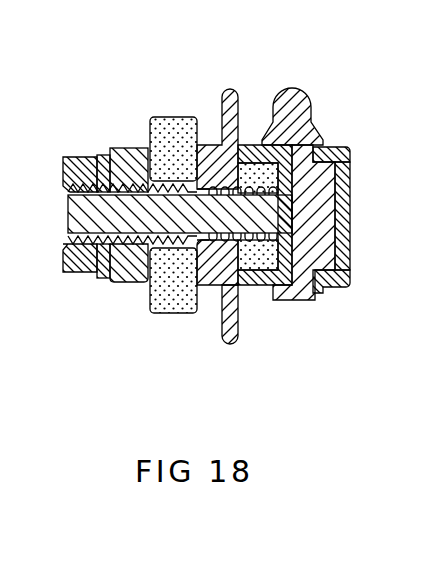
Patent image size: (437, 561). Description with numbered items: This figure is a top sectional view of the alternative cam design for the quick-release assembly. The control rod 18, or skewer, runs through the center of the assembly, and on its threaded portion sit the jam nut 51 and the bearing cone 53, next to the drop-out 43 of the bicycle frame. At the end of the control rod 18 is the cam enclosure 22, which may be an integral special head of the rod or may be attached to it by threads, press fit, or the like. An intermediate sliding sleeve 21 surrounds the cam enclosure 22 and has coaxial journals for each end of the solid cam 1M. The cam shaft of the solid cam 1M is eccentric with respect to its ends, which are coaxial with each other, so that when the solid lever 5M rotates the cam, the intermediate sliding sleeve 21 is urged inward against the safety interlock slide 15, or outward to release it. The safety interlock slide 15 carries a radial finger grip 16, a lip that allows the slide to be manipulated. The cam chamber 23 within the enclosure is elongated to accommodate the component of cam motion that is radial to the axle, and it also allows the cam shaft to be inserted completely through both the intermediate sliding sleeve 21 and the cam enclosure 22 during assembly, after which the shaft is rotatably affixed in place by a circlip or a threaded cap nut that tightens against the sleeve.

The control rod 18 is at (85, 207).
The bearing cone 53 is at (80, 270).
The jam nut 51 is at (133, 283).
The drop-out 43 is at (180, 117).
The radial finger grip 16 is at (237, 333).
The safety interlock slide 15 is at (252, 305).
The solid cam 1M is at (325, 215).
The solid lever 5M is at (290, 93).
The intermediate sliding sleeve 21 is at (336, 147).
The cam enclosure 22 is at (343, 180).
The cam chamber 23 is at (328, 245).